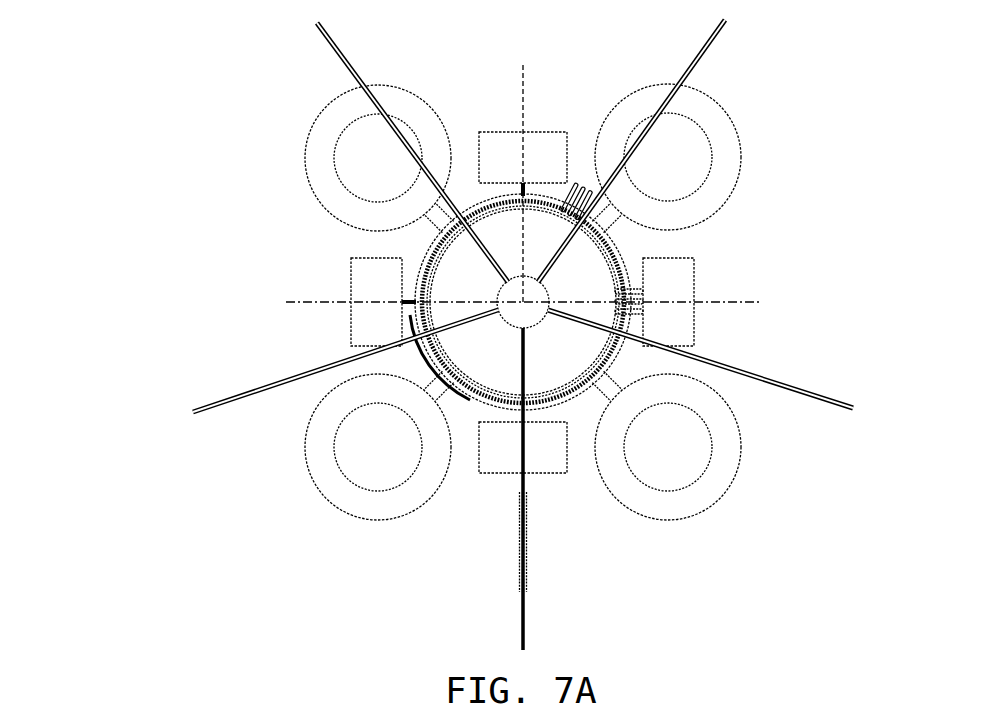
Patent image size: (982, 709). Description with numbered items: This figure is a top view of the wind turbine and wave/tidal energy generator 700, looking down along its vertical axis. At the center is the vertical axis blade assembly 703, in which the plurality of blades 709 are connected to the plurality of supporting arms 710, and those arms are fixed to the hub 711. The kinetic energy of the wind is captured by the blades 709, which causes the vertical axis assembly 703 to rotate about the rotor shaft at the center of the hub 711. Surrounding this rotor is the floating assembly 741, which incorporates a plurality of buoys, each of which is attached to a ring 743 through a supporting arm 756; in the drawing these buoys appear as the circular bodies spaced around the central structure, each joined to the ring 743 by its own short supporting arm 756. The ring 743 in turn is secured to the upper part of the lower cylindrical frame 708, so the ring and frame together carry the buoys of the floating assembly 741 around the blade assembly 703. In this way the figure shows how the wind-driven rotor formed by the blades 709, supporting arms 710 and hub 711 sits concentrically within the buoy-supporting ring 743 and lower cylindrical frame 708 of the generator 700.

The wind turbine and wave/tidal energy generator 700 is at (166, 210).
The vertical axis blade assembly 703 is at (462, 372).
The lower cylindrical frame 708 is at (432, 259).
The blades 709 is at (527, 622).
The supporting arms 710 is at (519, 497).
The hub 711 is at (547, 302).
The floating assembly 741 is at (752, 478).
The ring 743 is at (618, 355).
The supporting arm 756 is at (597, 387).